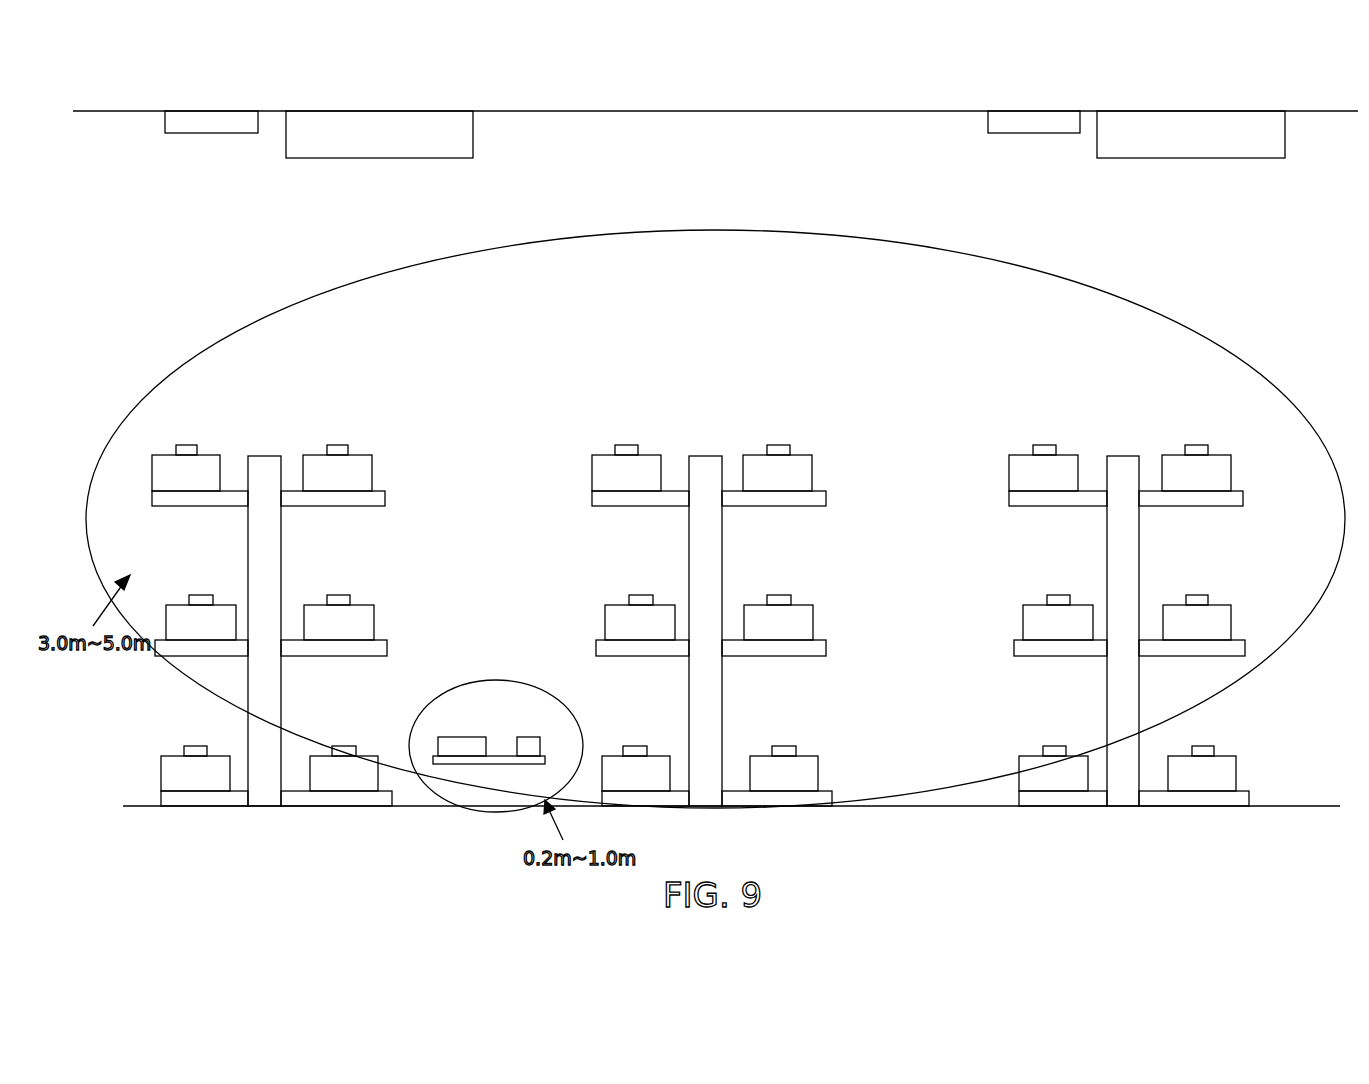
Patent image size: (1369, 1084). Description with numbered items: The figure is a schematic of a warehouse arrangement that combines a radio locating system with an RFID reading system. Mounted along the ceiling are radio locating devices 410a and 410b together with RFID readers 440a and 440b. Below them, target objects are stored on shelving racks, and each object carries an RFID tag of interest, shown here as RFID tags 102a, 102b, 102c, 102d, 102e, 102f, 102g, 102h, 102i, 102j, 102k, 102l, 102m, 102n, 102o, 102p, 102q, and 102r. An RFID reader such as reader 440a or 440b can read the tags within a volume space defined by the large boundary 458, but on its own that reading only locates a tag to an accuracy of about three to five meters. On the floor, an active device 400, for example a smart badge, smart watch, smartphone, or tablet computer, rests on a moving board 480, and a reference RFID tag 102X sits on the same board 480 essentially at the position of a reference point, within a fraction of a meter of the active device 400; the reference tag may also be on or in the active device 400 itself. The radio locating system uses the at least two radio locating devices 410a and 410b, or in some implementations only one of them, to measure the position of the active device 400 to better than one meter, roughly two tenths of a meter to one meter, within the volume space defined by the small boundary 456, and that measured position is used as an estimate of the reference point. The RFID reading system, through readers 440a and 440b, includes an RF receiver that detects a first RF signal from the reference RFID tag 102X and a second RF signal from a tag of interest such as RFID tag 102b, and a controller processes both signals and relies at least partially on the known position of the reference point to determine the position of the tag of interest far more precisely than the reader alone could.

The radio locating device 410a is at (213, 133).
The RFID reader 440a is at (380, 158).
The radio locating device 410b is at (1033, 133).
The RFID reader 440b is at (1193, 158).
The boundary 458 is at (1255, 365).
The boundary 456 is at (495, 680).
The board 480 is at (466, 764).
The active device 400 is at (462, 737).
The reference RFID tag 102X is at (527, 737).
The RFID tag 102a is at (337, 445).
The RFID tag 102b is at (338, 595).
The RFID tag 102c is at (345, 746).
The RFID tag 102d is at (626, 445).
The RFID tag 102e is at (641, 595).
The RFID tag 102f is at (635, 746).
The RFID tag 102g is at (779, 445).
The RFID tag 102h is at (779, 595).
The RFID tag 102i is at (784, 746).
The RFID tag 102j is at (1045, 445).
The RFID tag 102k is at (1058, 595).
The RFID tag 102l is at (1054, 746).
The RFID tag 102m is at (1196, 445).
The RFID tag 102n is at (1197, 595).
The RFID tag 102o is at (1204, 746).
The RFID tag 102p is at (186, 445).
The RFID tag 102q is at (200, 595).
The RFID tag 102r is at (196, 746).